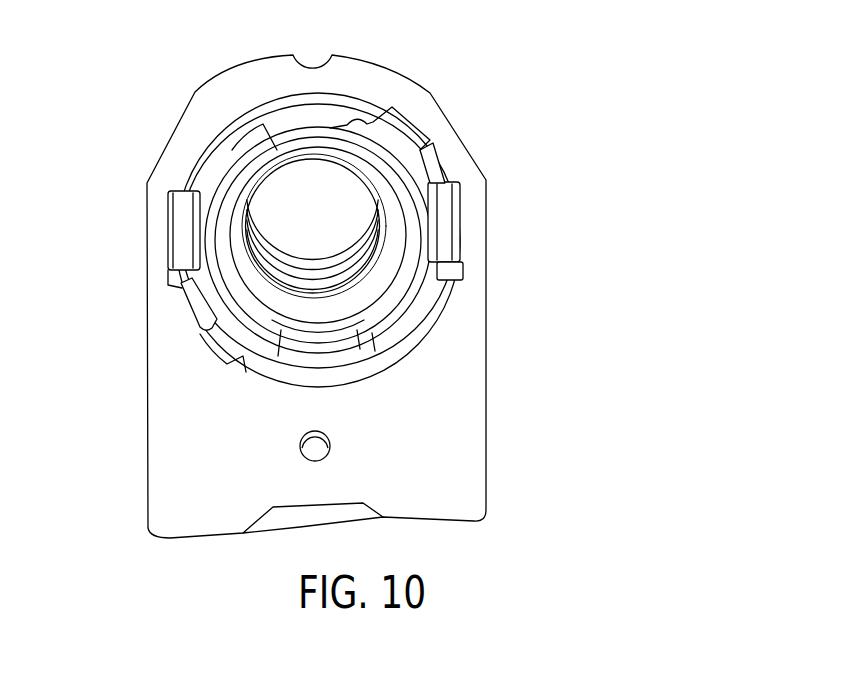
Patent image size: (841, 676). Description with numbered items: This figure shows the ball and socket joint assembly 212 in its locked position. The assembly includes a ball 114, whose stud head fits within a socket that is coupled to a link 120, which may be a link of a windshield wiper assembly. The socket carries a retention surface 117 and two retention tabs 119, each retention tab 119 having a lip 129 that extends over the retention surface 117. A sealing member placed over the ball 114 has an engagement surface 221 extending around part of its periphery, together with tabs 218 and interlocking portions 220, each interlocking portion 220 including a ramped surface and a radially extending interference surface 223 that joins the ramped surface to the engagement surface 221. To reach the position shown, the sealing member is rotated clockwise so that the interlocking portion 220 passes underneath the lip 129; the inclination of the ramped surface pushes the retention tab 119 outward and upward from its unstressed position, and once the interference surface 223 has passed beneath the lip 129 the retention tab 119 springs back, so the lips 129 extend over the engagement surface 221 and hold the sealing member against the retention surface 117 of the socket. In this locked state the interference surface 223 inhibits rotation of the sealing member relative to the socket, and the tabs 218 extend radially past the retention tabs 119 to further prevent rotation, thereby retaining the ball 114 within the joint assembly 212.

The ball 114 is at (312, 170).
The retention surface 117 is at (312, 348).
The retention tab 119 is at (188, 258).
The link 120 is at (473, 423).
The lip 129 is at (197, 232).
The ball and socket joint assembly 212 is at (95, 325).
The tab 218 is at (412, 128).
The interlocking portion 220 is at (200, 185).
The engagement surface 221 is at (218, 297).
The interference surface 223 is at (172, 192).